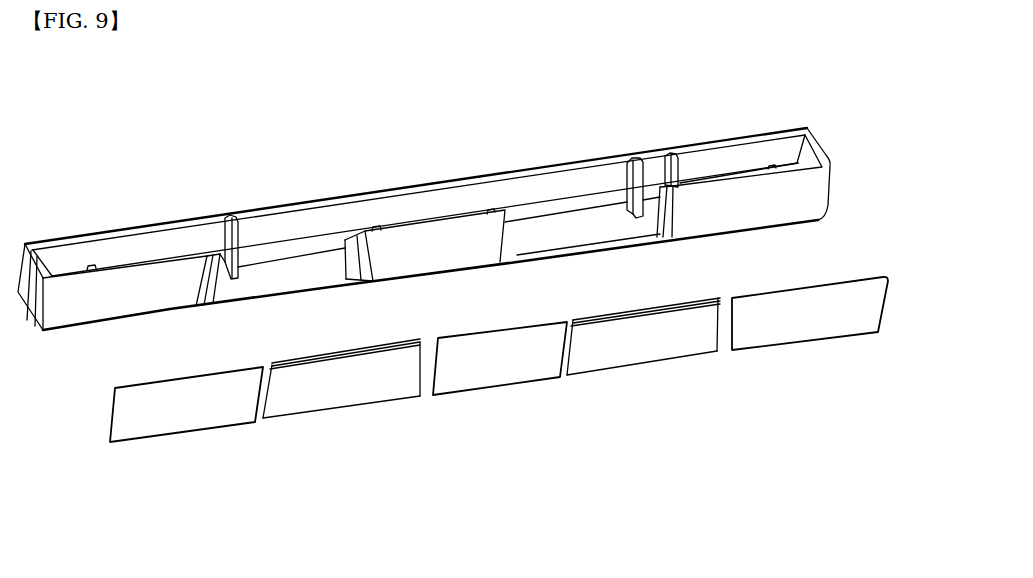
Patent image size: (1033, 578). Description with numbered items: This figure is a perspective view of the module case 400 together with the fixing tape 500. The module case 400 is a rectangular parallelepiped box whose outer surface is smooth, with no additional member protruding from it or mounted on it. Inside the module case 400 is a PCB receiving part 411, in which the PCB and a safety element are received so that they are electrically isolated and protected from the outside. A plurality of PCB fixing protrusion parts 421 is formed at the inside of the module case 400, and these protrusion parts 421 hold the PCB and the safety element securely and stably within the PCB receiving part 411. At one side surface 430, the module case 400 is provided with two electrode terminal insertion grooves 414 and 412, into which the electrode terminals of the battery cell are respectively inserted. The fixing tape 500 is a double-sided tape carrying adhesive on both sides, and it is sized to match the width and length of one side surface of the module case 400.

The module case 400 is at (122, 347).
The PCB receiving part 411 is at (552, 229).
The electrode terminal insertion groove 412 is at (278, 287).
The electrode terminal insertion groove 414 is at (585, 243).
The PCB fixing protrusion part 421 is at (243, 237).
The side surface 430 is at (745, 216).
The fixing tape 500 is at (152, 458).